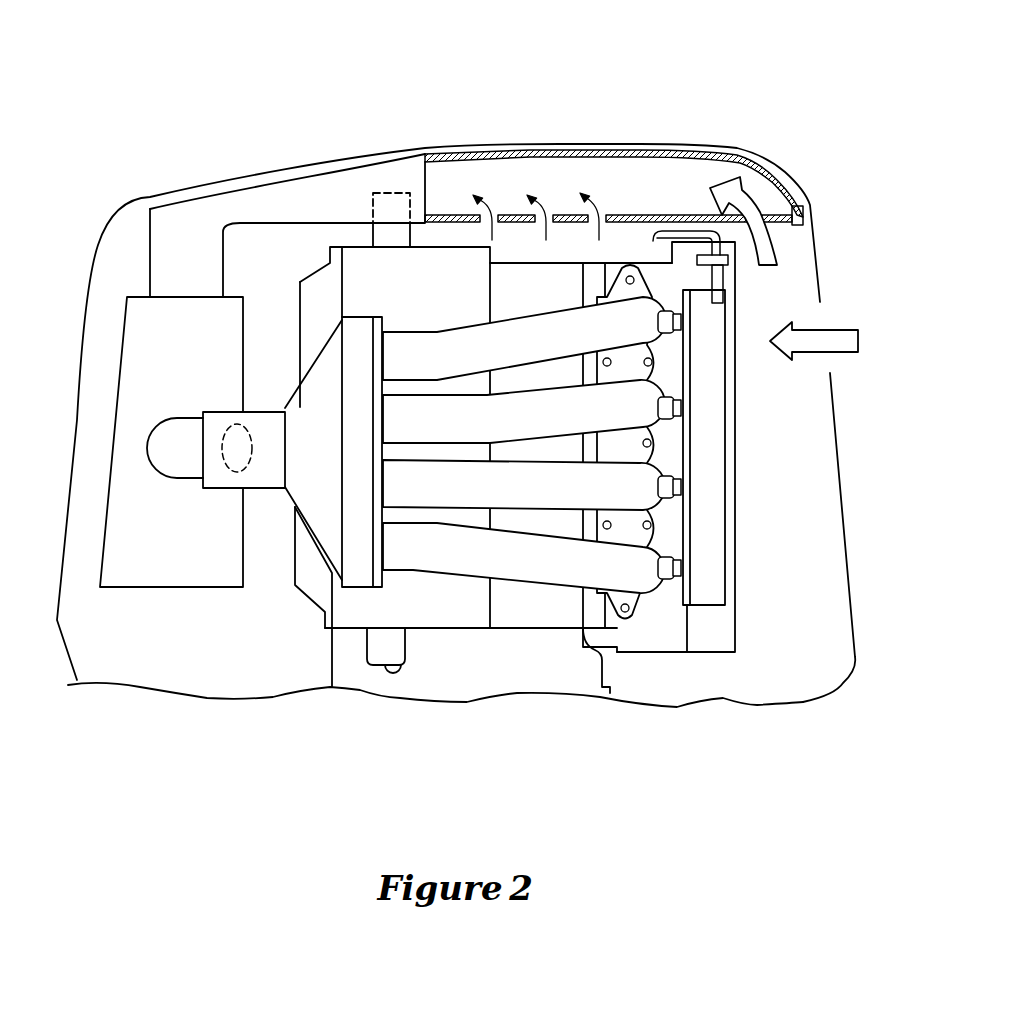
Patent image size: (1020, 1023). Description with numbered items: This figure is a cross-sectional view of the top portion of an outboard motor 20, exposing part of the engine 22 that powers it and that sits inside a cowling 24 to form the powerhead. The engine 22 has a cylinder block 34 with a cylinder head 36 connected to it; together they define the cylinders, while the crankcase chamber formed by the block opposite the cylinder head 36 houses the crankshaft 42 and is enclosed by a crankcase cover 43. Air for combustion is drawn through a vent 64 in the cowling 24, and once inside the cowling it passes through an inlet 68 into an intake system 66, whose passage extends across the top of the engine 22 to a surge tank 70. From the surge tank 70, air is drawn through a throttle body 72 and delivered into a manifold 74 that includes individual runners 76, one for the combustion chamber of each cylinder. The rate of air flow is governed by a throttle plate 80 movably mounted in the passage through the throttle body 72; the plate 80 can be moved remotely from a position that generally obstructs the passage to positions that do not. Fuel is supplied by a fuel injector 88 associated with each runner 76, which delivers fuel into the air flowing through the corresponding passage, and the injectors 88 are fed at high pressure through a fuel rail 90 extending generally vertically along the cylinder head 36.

The outboard motor 20 is at (735, 85).
The engine 22 is at (308, 665).
The cowling 24 is at (83, 325).
The cylinder block 34 is at (553, 628).
The cylinder head 36 is at (660, 655).
The crankshaft 42 is at (403, 650).
The crankcase cover 43 is at (293, 578).
The vent 64 is at (817, 312).
The intake system 66 is at (145, 227).
The inlet 68 is at (785, 230).
The surge tank 70 is at (153, 587).
The throttle body 72 is at (260, 410).
The manifold 74 is at (323, 557).
The runners 76 is at (465, 320).
The throttle plate 80 is at (250, 462).
The fuel injector 88 is at (674, 400).
The fuel rail 90 is at (727, 580).